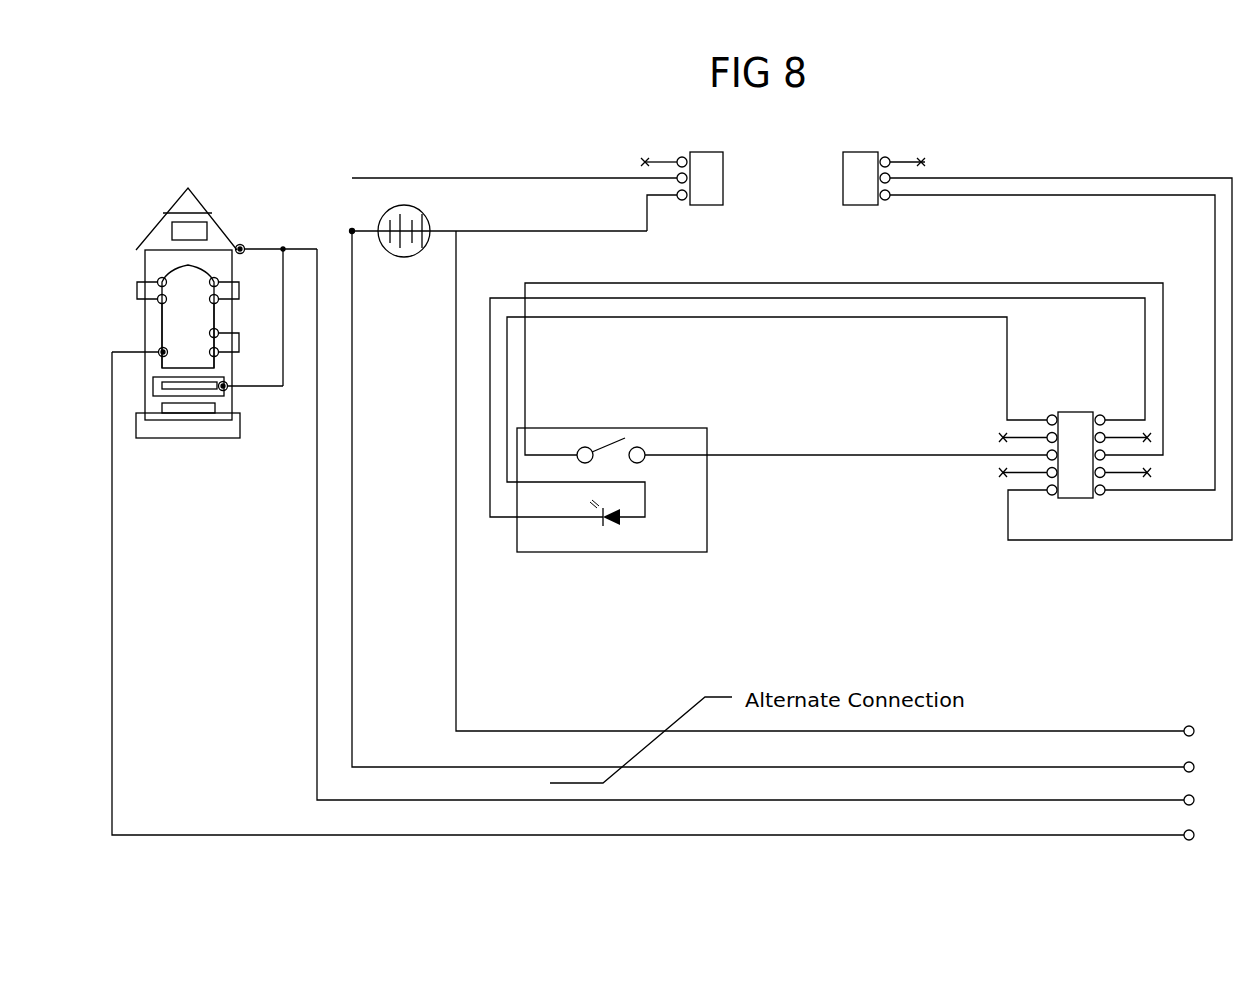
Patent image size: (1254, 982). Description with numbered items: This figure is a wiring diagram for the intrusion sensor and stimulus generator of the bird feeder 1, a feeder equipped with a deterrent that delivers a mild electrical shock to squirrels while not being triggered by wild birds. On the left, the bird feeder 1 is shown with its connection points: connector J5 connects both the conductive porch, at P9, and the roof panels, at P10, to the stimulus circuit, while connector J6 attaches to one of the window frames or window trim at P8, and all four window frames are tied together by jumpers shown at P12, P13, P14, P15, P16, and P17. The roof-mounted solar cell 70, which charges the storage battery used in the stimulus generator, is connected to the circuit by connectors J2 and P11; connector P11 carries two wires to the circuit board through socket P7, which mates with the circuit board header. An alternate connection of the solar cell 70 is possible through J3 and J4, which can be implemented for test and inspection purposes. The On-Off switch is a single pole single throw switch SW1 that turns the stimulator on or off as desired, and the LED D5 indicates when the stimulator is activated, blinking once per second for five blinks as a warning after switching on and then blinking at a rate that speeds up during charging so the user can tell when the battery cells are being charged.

The bird feeder 1 is at (258, 166).
The solar cell 70 is at (428, 217).
The window frame connection point P8 is at (134, 341).
The conductive porch connection point P9 is at (251, 377).
The roof panel connection point P10 is at (277, 234).
The window frame jumper point P12 is at (132, 278).
The window frame jumper point P13 is at (132, 298).
The window frame jumper point P14 is at (244, 275).
The window frame jumper point P15 is at (244, 297).
The window frame jumper point P16 is at (244, 328).
The window frame jumper point P17 is at (244, 350).
The solar cell connector J2 is at (714, 176).
The solar cell connector P11 is at (872, 175).
The socket P7 is at (1081, 458).
The single pole single throw switch SW1 is at (611, 410).
The LED D5 is at (608, 519).
The alternate solar cell connector J3 is at (1206, 733).
The alternate solar cell connector J4 is at (1206, 767).
The porch and roof connector J5 is at (1206, 801).
The window frame connector J6 is at (1206, 836).